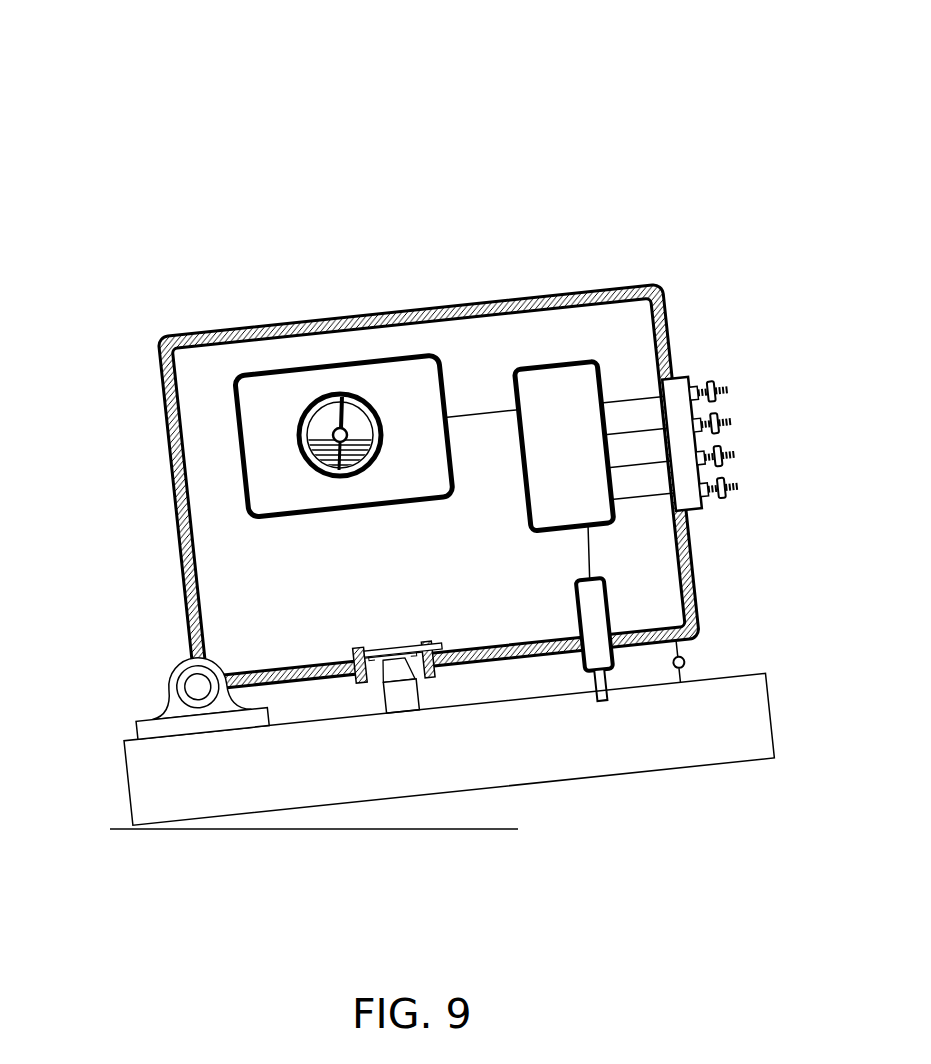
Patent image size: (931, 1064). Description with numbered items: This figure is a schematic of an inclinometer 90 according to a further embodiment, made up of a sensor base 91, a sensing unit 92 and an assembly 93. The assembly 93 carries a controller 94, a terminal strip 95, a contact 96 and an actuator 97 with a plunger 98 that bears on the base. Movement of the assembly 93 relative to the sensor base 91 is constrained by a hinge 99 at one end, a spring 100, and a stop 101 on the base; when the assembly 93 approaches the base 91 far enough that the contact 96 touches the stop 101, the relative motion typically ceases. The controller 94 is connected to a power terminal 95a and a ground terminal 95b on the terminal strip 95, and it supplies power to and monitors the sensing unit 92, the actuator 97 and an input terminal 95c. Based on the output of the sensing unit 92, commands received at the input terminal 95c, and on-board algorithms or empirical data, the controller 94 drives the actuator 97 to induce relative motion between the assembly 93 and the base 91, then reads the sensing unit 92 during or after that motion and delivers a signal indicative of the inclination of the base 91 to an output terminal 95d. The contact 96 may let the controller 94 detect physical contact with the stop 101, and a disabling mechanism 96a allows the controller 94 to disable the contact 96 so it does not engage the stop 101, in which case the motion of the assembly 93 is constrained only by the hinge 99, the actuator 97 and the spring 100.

The inclinometer 90 is at (643, 76).
The sensor base 91 is at (728, 742).
The sensing unit 92 is at (296, 381).
The assembly 93 is at (178, 343).
The controller 94 is at (558, 397).
The terminal strip 95 is at (675, 385).
The power terminal 95a is at (730, 380).
The ground terminal 95b is at (724, 420).
The input terminal 95c is at (729, 453).
The output terminal 95d is at (736, 489).
The contact 96 is at (352, 653).
The disabling mechanism 96a is at (442, 643).
The actuator 97 is at (593, 640).
The plunger 98 is at (603, 707).
The hinge 99 is at (168, 705).
The spring 100 is at (697, 662).
The stop 101 is at (420, 700).